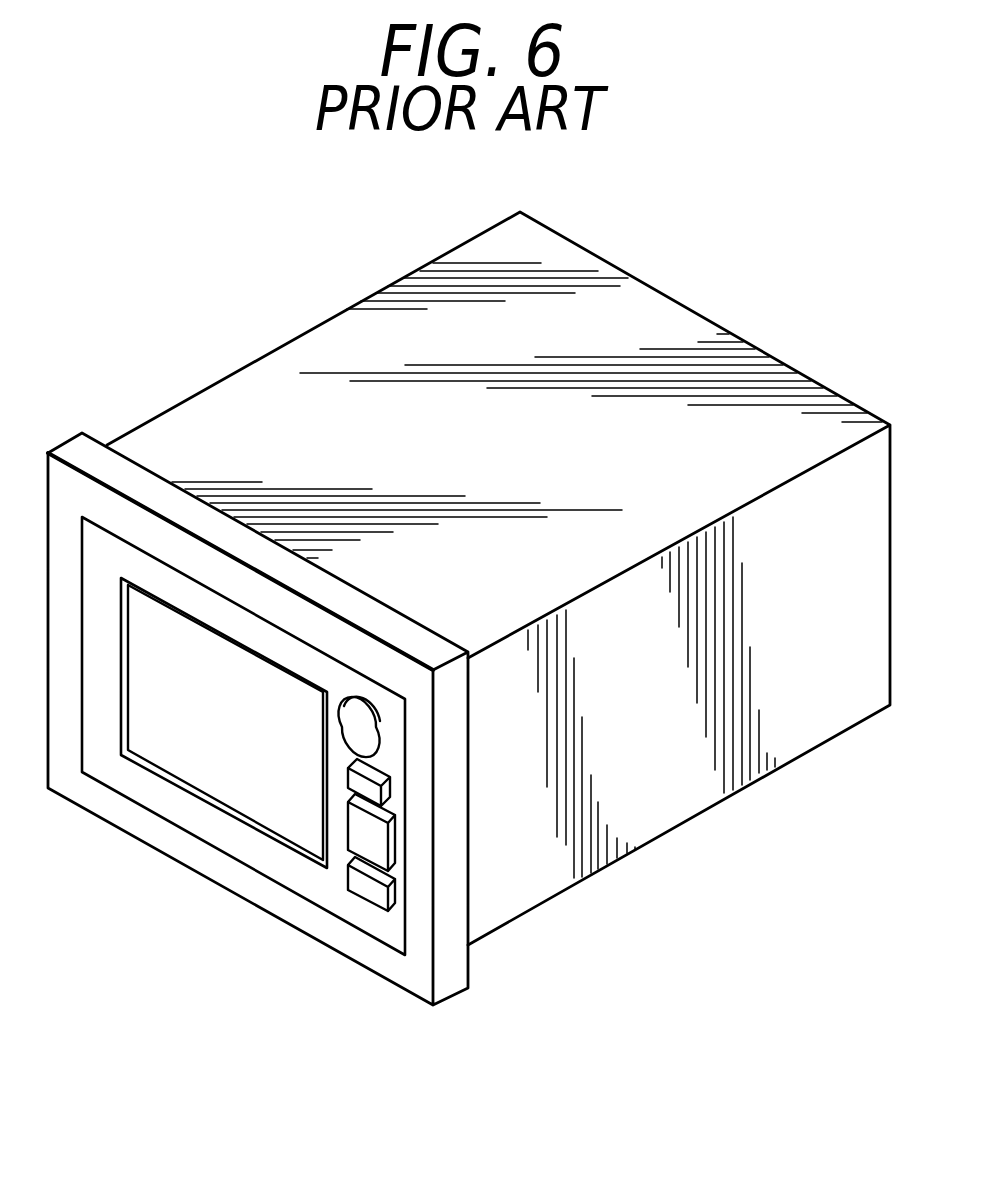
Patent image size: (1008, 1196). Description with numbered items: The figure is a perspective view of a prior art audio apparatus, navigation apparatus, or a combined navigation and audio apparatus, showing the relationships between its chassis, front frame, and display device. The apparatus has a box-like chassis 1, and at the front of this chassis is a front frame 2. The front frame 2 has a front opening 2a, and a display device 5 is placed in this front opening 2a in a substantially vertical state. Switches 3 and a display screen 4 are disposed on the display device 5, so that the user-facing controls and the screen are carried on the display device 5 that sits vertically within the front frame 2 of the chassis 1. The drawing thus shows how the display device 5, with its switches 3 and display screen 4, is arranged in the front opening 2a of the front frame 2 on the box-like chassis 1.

The chassis 1 is at (663, 837).
The front frame 2 is at (455, 978).
The front opening 2a is at (360, 930).
The switches 3 is at (345, 772).
The display screen 4 is at (276, 808).
The display device 5 is at (178, 800).